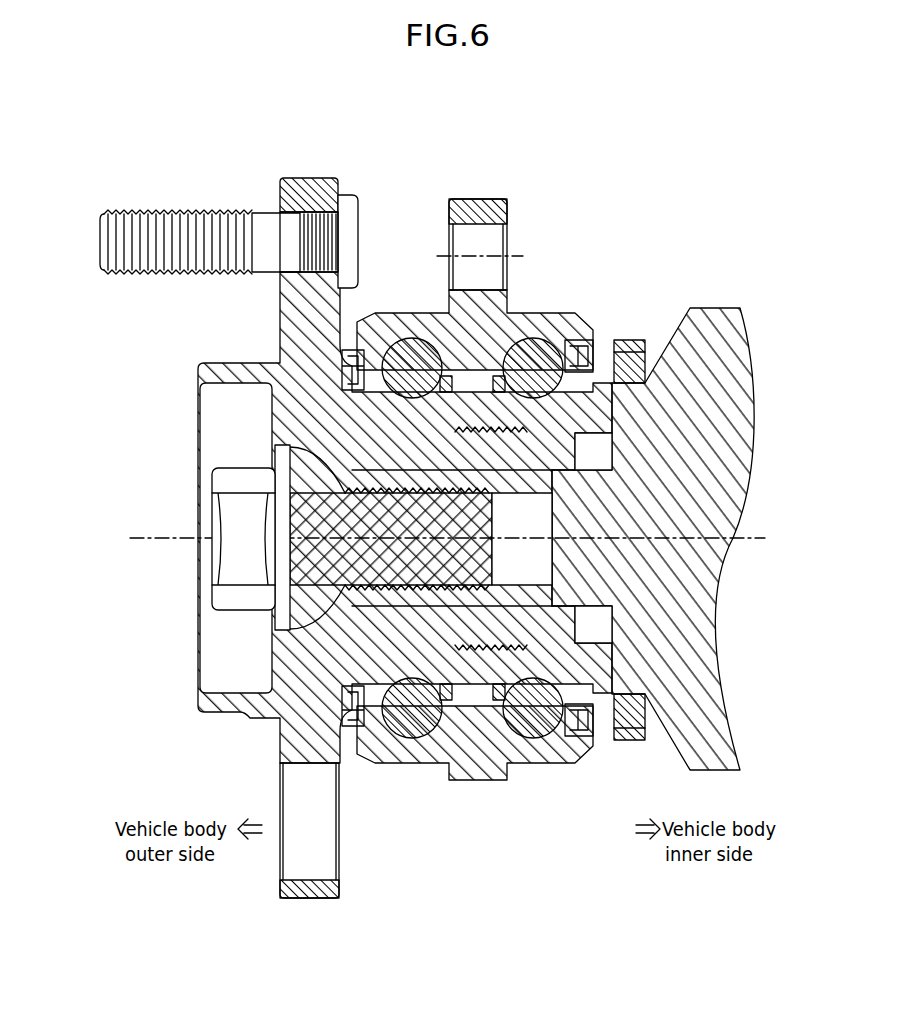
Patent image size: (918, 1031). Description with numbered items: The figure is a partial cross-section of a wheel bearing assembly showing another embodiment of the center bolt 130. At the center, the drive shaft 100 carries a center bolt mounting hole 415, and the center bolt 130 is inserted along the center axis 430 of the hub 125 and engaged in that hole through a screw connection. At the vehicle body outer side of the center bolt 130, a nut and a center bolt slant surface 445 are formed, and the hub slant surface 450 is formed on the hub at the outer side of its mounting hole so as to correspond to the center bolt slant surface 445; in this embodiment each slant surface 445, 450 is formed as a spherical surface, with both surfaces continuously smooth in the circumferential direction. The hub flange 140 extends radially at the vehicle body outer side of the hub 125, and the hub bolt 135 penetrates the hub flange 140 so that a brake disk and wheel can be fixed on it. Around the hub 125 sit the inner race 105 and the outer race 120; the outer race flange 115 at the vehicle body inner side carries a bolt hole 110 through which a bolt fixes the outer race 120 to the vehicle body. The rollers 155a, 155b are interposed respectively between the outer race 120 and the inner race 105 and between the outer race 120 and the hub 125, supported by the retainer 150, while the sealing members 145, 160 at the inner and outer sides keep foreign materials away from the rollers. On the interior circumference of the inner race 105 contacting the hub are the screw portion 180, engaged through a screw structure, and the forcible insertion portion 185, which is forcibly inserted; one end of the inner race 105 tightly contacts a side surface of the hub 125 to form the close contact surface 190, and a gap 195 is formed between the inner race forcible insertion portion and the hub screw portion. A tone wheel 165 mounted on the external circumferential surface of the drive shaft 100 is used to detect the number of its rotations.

The drive shaft 100 is at (690, 668).
The inner race 105 is at (605, 325).
The bolt hole 110 is at (495, 243).
The outer race flange 115 is at (474, 210).
The outer race 120 is at (490, 748).
The hub 125 is at (395, 648).
The center bolt 130 is at (272, 598).
The hub bolt 135 is at (288, 240).
The hub flange 140 is at (304, 188).
The sealing member 145 is at (345, 360).
The retainer 150 is at (515, 352).
The roller 155a is at (578, 342).
The roller 155b is at (412, 362).
The sealing member 160 is at (628, 342).
The tone wheel 165 is at (628, 742).
The screw portion 180 is at (600, 452).
The forcible insertion portion 185 is at (640, 447).
The close contact surface 190 is at (612, 418).
The gap 195 is at (640, 410).
The center bolt mounting hole 415 is at (530, 558).
The center axis 430 is at (742, 538).
The center bolt slant surface 445 is at (285, 492).
The hub slant surface 450 is at (300, 470).